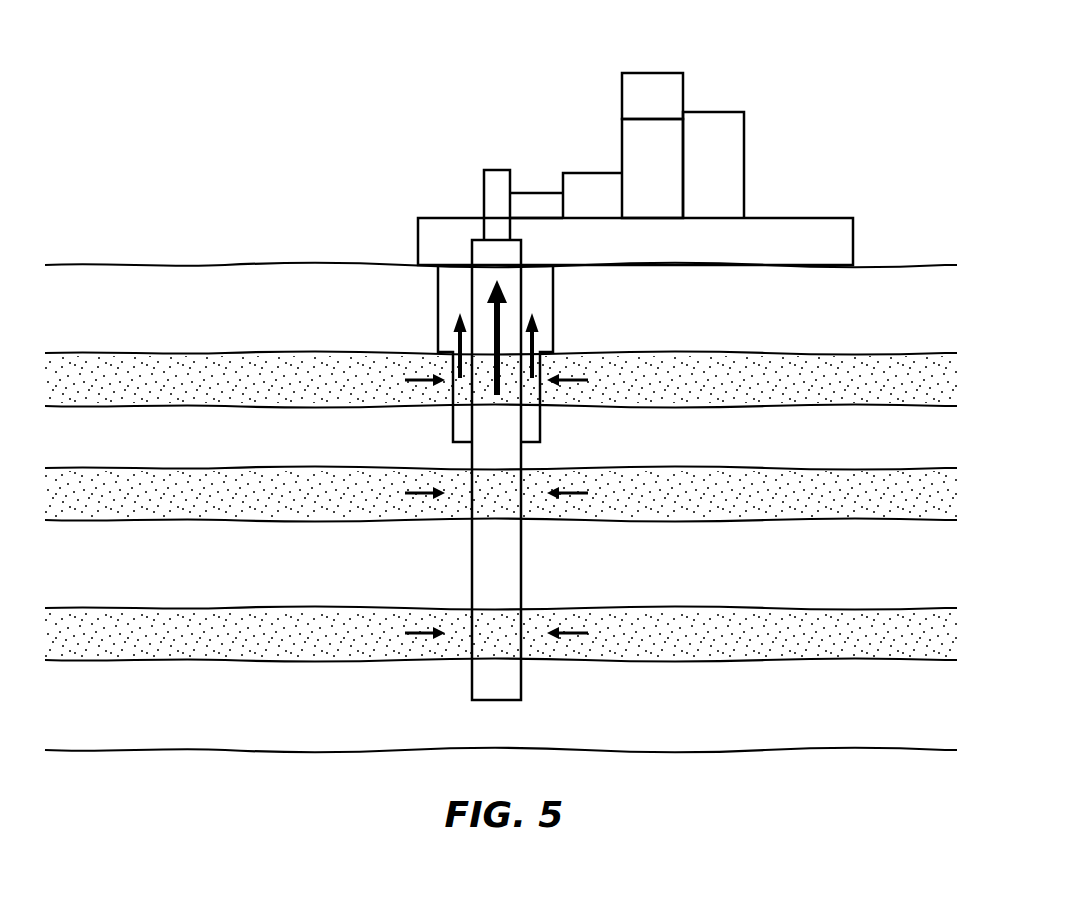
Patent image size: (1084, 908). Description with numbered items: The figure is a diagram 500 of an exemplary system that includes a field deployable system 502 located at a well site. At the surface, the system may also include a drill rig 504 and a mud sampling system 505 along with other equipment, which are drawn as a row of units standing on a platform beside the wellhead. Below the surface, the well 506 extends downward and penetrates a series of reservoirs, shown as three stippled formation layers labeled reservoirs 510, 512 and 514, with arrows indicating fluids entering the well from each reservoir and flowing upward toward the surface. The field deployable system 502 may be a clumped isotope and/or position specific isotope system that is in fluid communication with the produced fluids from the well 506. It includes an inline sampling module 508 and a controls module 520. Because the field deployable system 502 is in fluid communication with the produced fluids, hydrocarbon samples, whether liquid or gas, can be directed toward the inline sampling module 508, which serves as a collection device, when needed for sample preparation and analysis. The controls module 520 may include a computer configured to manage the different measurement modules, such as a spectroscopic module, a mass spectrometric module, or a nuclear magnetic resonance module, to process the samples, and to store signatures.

The diagram 500 is at (405, 42).
The field deployable system 502 is at (622, 142).
The drill rig 504 is at (838, 217).
The mud sampling system 505 is at (730, 112).
The well 506 is at (470, 685).
The inline sampling module 508 is at (597, 172).
The reservoir 510 is at (138, 392).
The reservoir 512 is at (138, 506).
The reservoir 514 is at (138, 646).
The controls module 520 is at (667, 73).